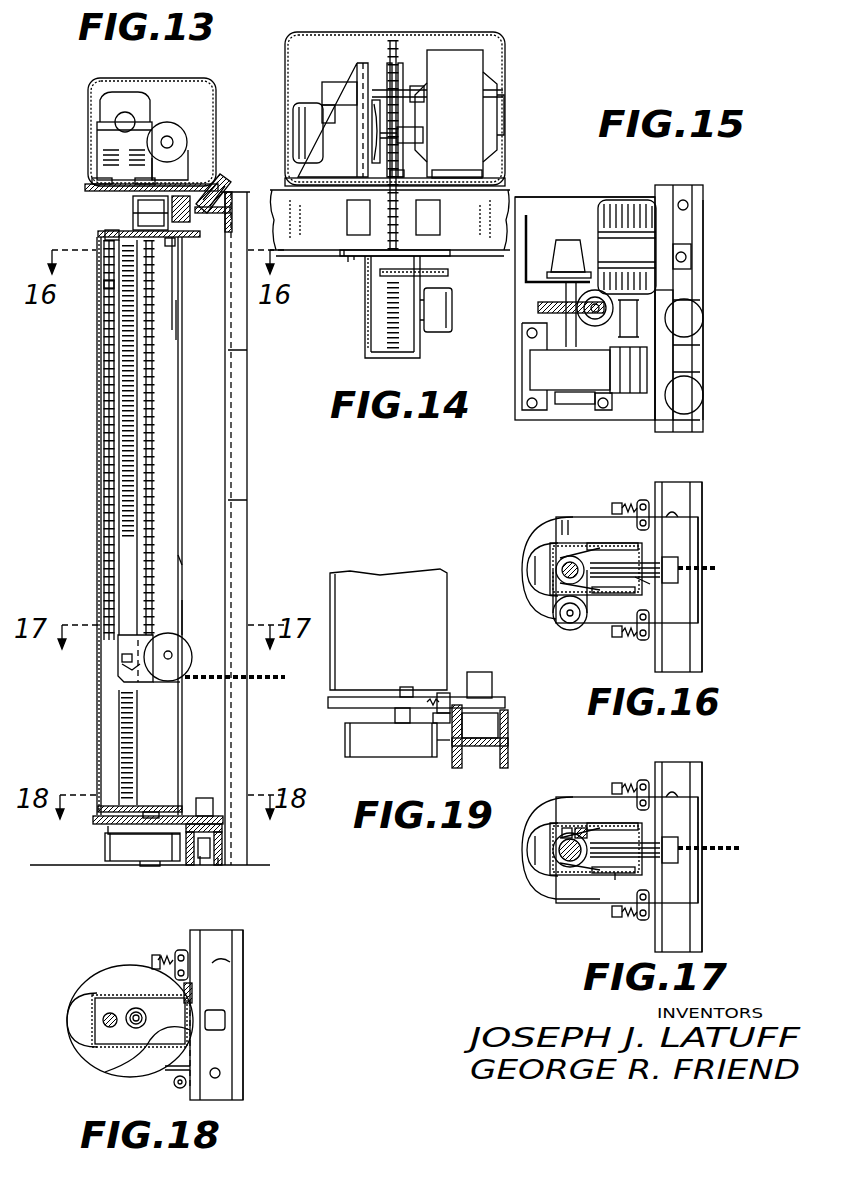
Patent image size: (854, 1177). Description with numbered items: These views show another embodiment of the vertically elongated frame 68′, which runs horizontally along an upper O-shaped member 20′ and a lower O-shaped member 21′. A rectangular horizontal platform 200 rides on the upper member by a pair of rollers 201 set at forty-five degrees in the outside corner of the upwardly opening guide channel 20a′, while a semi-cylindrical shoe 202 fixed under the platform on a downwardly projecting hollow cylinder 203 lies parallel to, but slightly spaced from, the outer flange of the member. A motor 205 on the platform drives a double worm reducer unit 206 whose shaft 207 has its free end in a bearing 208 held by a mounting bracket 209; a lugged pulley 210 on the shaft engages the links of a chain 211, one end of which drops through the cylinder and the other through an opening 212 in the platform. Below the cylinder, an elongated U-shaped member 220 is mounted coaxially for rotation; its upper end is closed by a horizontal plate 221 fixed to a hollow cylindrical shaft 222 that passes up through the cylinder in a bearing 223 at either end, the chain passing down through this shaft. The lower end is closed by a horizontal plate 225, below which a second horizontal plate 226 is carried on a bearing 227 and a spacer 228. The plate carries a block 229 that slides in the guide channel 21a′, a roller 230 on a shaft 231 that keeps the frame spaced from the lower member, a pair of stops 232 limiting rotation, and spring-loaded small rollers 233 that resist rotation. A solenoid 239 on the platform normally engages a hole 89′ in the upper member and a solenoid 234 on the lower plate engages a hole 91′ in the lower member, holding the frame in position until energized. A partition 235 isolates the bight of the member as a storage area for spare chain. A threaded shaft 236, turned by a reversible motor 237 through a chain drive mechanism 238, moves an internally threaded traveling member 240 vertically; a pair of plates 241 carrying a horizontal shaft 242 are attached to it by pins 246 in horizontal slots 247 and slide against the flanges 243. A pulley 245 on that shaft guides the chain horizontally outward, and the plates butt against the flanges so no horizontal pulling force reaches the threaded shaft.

In FIG. 13, the upper O-shaped member 20′ is at (236, 197).
In FIG. 14, the upper O-shaped member 20′ is at (348, 258).
In FIG. 15, the upper O-shaped member 20′ is at (706, 223).
In FIG. 14, the upwardly opening guide channel 20a′ is at (354, 260).
In FIG. 13, the lower O-shaped member 21′ is at (230, 816).
In FIG. 16, the lower O-shaped member 21′ is at (703, 487).
In FIG. 17, the lower O-shaped member 21′ is at (723, 855).
In FIG. 18, the lower O-shaped member 21′ is at (236, 950).
In FIG. 19, the lower O-shaped member 21′ is at (508, 740).
In FIG. 13, the upwardly opening guide channel 21a′ is at (200, 862).
In FIG. 15, the upwardly opening guide channel 21a′ is at (696, 186).
In FIG. 16, the upwardly opening guide channel 21a′ is at (690, 486).
In FIG. 17, the upwardly opening guide channel 21a′ is at (702, 843).
In FIG. 18, the upwardly opening guide channel 21a′ is at (228, 940).
In FIG. 19, the upwardly opening guide channel 21a′ is at (496, 760).
In FIG. 13, the vertically elongated frame 68′ is at (78, 154).
In FIG. 14, the vertically elongated frame 68′ is at (507, 120).
In FIG. 15, the vertically elongated frame 68′ is at (605, 195).
In FIG. 15, the hole 89′ is at (690, 205).
In FIG. 13, the hole 91′ is at (218, 863).
In FIG. 16, the hole 91′ is at (678, 514).
In FIG. 17, the hole 91′ is at (674, 764).
In FIG. 18, the hole 91′ is at (220, 962).
In FIG. 13, the platform 200 is at (85, 188).
In FIG. 14, the platform 200 is at (507, 190).
In FIG. 15, the platform 200 is at (538, 422).
In FIG. 13, the rollers 201 is at (226, 178).
In FIG. 15, the rollers 201 is at (690, 326).
In FIG. 13, the semi-cylindrical shoe 202 is at (187, 219).
In FIG. 14, the semi-cylindrical shoe 202 is at (347, 218).
In FIG. 13, the hollow cylinder 203 is at (176, 246).
In FIG. 14, the hollow cylinder 203 is at (406, 224).
In FIG. 13, the motor 205 is at (178, 127).
In FIG. 14, the motor 205 is at (300, 116).
In FIG. 15, the motor 205 is at (636, 200).
In FIG. 13, the double worm reducer unit 206 is at (127, 98).
In FIG. 14, the double worm reducer unit 206 is at (470, 78).
In FIG. 15, the double worm reducer unit 206 is at (588, 405).
In FIG. 14, the shaft 207 is at (425, 115).
In FIG. 15, the shaft 207 is at (584, 366).
In FIG. 14, the bearing 208 is at (330, 90).
In FIG. 15, the bearing 208 is at (565, 242).
In FIG. 14, the mounting bracket 209 is at (356, 78).
In FIG. 15, the mounting bracket 209 is at (530, 214).
In FIG. 14, the pulley 210 is at (392, 64).
In FIG. 15, the pulley 210 is at (580, 312).
In FIG. 13, the chain 211 is at (146, 352).
In FIG. 14, the chain 211 is at (385, 172).
In FIG. 16, the chain 211 is at (720, 570).
In FIG. 17, the chain 211 is at (731, 843).
In FIG. 13, the opening 212 is at (105, 235).
In FIG. 15, the opening 212 is at (538, 307).
In FIG. 13, the elongated member 220 is at (98, 446).
In FIG. 14, the elongated member 220 is at (366, 356).
In FIG. 16, the elongated member 220 is at (572, 535).
In FIG. 17, the elongated member 220 is at (598, 858).
In FIG. 18, the elongated member 220 is at (126, 995).
In FIG. 19, the elongated member 220 is at (388, 585).
In FIG. 13, the horizontal plate 221 is at (182, 262).
In FIG. 14, the horizontal plate 221 is at (346, 256).
In FIG. 13, the hollow cylindrical shaft 222 is at (177, 318).
In FIG. 14, the hollow cylindrical shaft 222 is at (450, 255).
In FIG. 13, the bearing 223 is at (136, 220).
In FIG. 16, the horizontal plate 225 is at (532, 568).
In FIG. 17, the horizontal plate 225 is at (526, 848).
In FIG. 18, the horizontal plate 225 is at (75, 1028).
In FIG. 13, the second horizontal plate 226 is at (94, 824).
In FIG. 16, the second horizontal plate 226 is at (700, 532).
In FIG. 17, the second horizontal plate 226 is at (649, 846).
In FIG. 18, the second horizontal plate 226 is at (243, 994).
In FIG. 19, the second horizontal plate 226 is at (358, 697).
In FIG. 13, the bearing 227 is at (152, 812).
In FIG. 18, the bearing 227 is at (148, 1008).
In FIG. 13, the spacer 228 is at (140, 806).
In FIG. 19, the spacer 228 is at (406, 687).
In FIG. 13, the block 229 is at (223, 845).
In FIG. 19, the block 229 is at (496, 718).
In FIG. 13, the roller 230 is at (118, 862).
In FIG. 19, the roller 230 is at (366, 757).
In FIG. 13, the shaft 231 is at (118, 836).
In FIG. 19, the shaft 231 is at (395, 715).
In FIG. 18, the stops 232 is at (165, 1070).
In FIG. 19, the stops 232 is at (434, 742).
In FIG. 16, the small roller 233 is at (642, 500).
In FIG. 17, the small roller 233 is at (615, 839).
In FIG. 18, the small roller 233 is at (180, 950).
In FIG. 19, the small roller 233 is at (445, 723).
In FIG. 13, the solenoid 234 is at (204, 798).
In FIG. 16, the solenoid 234 is at (680, 565).
In FIG. 17, the solenoid 234 is at (705, 839).
In FIG. 18, the solenoid 234 is at (226, 1020).
In FIG. 19, the solenoid 234 is at (492, 678).
In FIG. 13, the partition 235 is at (118, 553).
In FIG. 16, the partition 235 is at (545, 550).
In FIG. 17, the partition 235 is at (519, 860).
In FIG. 18, the partition 235 is at (97, 1035).
In FIG. 13, the shaft 236 is at (130, 583).
In FIG. 14, the shaft 236 is at (388, 330).
In FIG. 16, the shaft 236 is at (550, 585).
In FIG. 17, the shaft 236 is at (513, 855).
In FIG. 18, the shaft 236 is at (110, 1027).
In FIG. 14, the motor 237 is at (440, 334).
In FIG. 16, the motor 237 is at (562, 628).
In FIG. 13, the chain drive mechanism 238 is at (104, 283).
In FIG. 14, the chain drive mechanism 238 is at (448, 277).
In FIG. 16, the chain drive mechanism 238 is at (553, 616).
In FIG. 15, the solenoid 239 is at (692, 257).
In FIG. 13, the traveling member 240 is at (140, 684).
In FIG. 17, the traveling member 240 is at (568, 915).
In FIG. 13, the plates 241 is at (165, 684).
In FIG. 16, the plates 241 is at (586, 555).
In FIG. 17, the plates 241 is at (599, 834).
In FIG. 13, the horizontal shaft 242 is at (187, 612).
In FIG. 16, the horizontal shaft 242 is at (642, 588).
In FIG. 17, the horizontal shaft 242 is at (603, 887).
In FIG. 13, the flanges 243 is at (182, 562).
In FIG. 16, the flanges 243 is at (640, 556).
In FIG. 17, the flanges 243 is at (620, 860).
In FIG. 18, the flanges 243 is at (192, 998).
In FIG. 13, the pulley 245 is at (172, 650).
In FIG. 16, the pulley 245 is at (660, 548).
In FIG. 17, the pulley 245 is at (640, 830).
In FIG. 13, the pins 246 is at (122, 667).
In FIG. 17, the pins 246 is at (588, 799).
In FIG. 13, the horizontal slots 247 is at (122, 656).
In FIG. 17, the horizontal slots 247 is at (537, 812).